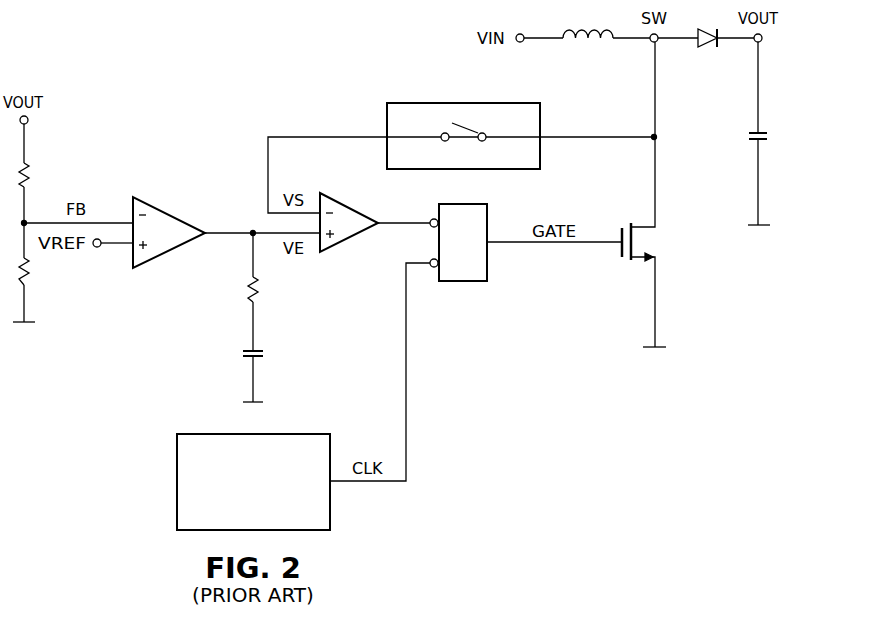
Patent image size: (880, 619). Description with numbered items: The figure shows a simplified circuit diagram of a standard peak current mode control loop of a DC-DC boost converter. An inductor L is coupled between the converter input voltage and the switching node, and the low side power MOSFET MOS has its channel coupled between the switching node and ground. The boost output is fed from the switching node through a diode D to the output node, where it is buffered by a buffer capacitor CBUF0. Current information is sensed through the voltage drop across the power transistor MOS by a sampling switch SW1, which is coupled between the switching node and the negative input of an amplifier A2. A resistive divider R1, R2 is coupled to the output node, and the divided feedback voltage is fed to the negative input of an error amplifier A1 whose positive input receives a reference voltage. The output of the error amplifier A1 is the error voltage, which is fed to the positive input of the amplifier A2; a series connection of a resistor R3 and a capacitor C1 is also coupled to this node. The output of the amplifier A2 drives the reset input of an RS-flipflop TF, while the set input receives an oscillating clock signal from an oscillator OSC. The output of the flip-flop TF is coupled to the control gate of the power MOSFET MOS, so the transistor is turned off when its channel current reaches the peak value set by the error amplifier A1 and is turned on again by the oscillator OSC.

The resistive divider resistor R1 is at (36, 175).
The resistive divider resistor R2 is at (36, 271).
The resistor R3 is at (268, 289).
The capacitor C1 is at (268, 352).
The error amplifier A1 is at (170, 213).
The amplifier A2 is at (349, 228).
The sampling switch SW1 is at (463, 125).
The RS-flipflop TF is at (458, 255).
The inductor L is at (588, 22).
The diode D is at (707, 50).
The power MOSFET MOS is at (660, 194).
The buffer capacitor CBUF0 is at (727, 137).
The oscillator OSC is at (253, 482).